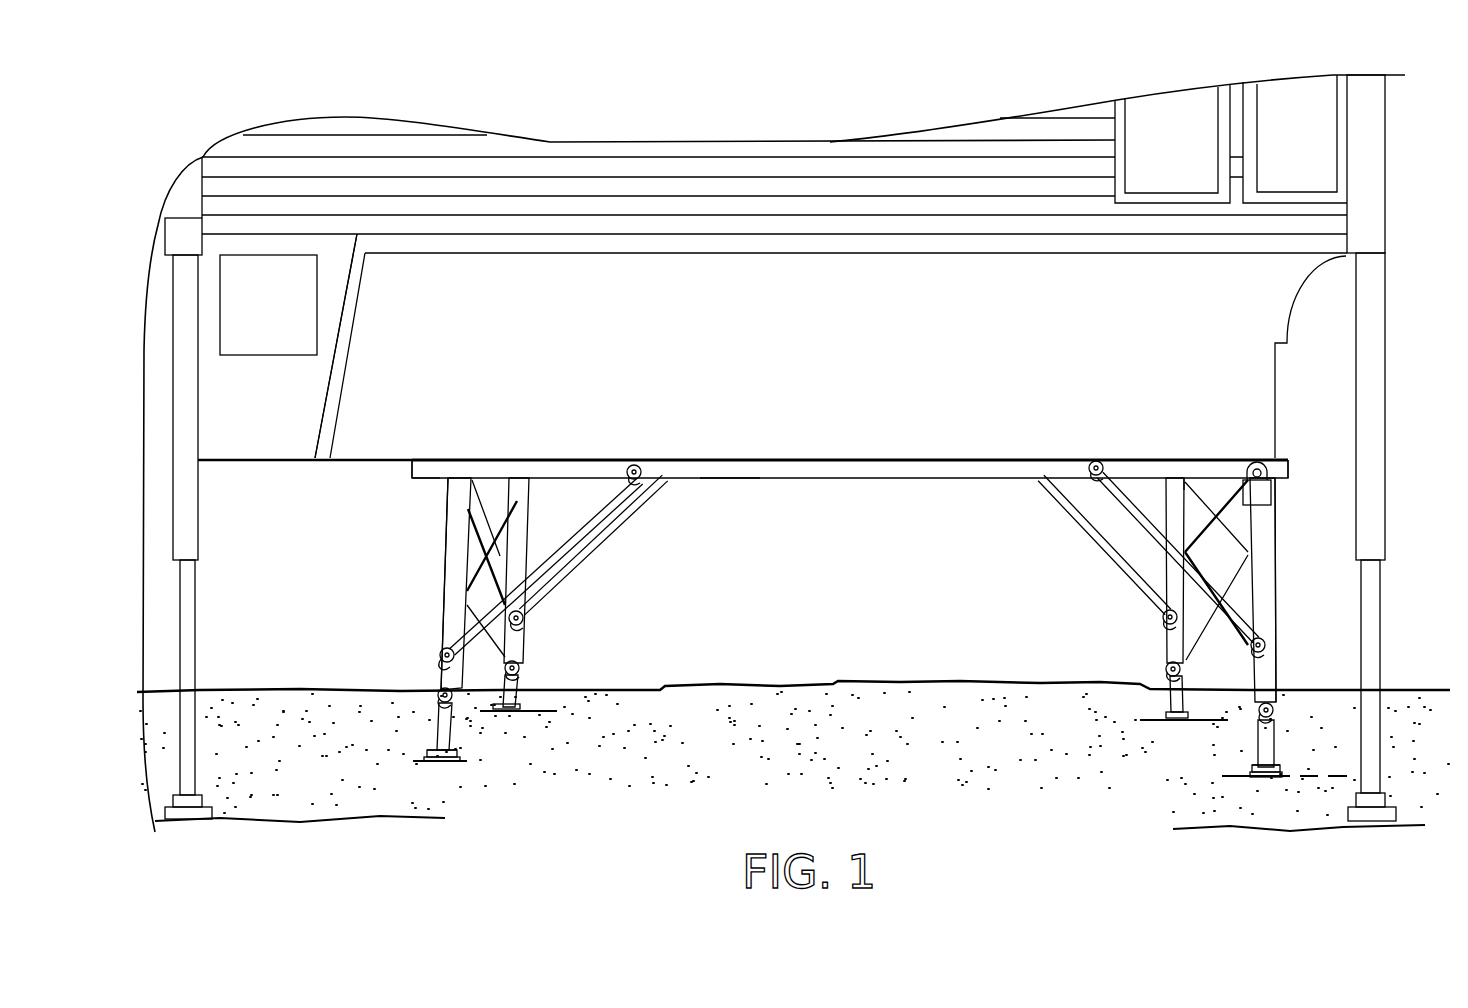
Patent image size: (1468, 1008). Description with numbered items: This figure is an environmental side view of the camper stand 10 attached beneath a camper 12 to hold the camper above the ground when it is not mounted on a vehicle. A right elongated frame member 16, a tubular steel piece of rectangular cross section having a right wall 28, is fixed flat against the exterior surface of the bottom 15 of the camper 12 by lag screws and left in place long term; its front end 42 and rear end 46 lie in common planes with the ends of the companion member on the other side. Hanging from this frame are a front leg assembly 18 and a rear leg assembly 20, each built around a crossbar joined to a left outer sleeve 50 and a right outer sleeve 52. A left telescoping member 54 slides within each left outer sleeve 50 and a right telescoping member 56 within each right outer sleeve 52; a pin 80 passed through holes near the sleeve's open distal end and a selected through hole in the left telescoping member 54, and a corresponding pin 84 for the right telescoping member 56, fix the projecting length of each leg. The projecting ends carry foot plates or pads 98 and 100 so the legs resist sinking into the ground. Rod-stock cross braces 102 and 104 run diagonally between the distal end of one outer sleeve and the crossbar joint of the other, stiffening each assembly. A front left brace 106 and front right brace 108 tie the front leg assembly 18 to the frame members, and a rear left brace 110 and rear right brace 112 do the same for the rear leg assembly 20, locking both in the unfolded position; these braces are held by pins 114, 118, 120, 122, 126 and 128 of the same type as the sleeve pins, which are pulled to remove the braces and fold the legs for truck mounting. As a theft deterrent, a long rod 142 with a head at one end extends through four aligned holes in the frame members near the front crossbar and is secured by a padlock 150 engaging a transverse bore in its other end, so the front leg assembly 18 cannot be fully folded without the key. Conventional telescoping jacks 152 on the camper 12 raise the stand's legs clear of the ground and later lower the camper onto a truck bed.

The camper stand 10 is at (394, 491).
The camper 12 is at (811, 326).
The bottom of the camper 15 is at (347, 462).
The right elongated frame member 16 is at (815, 497).
The front leg assembly 18 is at (1296, 551).
The rear leg assembly 20 is at (424, 618).
The right wall 28 is at (898, 474).
The front end of the right elongated frame member 42 is at (1289, 468).
The rear end of the right elongated frame member 46 is at (411, 468).
The left outer sleeve 50 is at (523, 538).
The right outer sleeve 52 is at (448, 542).
The left telescoping member 54 is at (516, 690).
The right telescoping member 56 is at (453, 727).
The pin 80 is at (517, 662).
The pin 84 is at (437, 691).
The foot plate 98 is at (512, 713).
The foot plate 100 is at (437, 762).
The cross brace 102 is at (492, 500).
The cross brace 104 is at (440, 585).
The front left brace 106 is at (1048, 494).
The front right brace 108 is at (1138, 490).
The rear left brace 110 is at (638, 516).
The rear right brace 112 is at (573, 548).
The pin 114 is at (1163, 614).
The pin 118 is at (1264, 640).
The pin 120 is at (1095, 460).
The pin 122 is at (524, 608).
The pin 126 is at (439, 657).
The pin 128 is at (650, 460).
The rod 142 is at (1257, 462).
The padlock 150 is at (1242, 468).
The telescoping jacks 152 is at (196, 420).